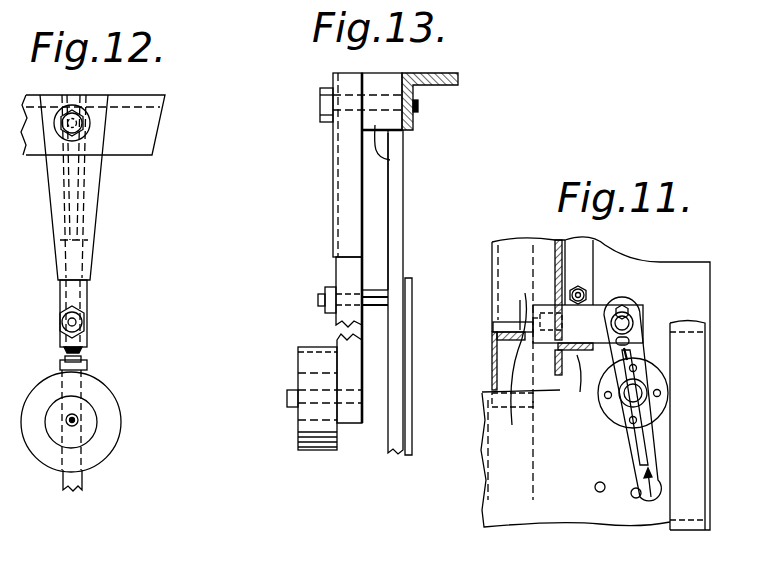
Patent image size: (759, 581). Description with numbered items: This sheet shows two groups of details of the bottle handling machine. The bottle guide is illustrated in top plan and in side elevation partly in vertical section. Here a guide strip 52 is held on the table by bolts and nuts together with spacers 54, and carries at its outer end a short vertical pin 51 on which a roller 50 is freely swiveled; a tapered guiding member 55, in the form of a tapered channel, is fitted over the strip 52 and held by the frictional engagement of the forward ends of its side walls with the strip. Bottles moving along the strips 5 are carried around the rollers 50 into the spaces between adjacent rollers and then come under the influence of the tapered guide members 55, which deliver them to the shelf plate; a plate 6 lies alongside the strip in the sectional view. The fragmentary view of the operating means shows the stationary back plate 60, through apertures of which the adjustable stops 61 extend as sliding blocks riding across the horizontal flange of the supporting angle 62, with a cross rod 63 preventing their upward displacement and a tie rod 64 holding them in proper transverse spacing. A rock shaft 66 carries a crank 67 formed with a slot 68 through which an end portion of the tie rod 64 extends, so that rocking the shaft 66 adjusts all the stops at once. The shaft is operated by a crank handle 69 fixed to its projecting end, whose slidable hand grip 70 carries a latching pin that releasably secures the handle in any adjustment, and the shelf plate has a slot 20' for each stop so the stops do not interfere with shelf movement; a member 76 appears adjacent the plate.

In FIG. 13, the strips 5 is at (405, 182).
In FIG. 11, the strips 5 is at (493, 327).
In FIG. 13, the plate 6 is at (407, 318).
In FIG. 11, the slot 20' is at (595, 383).
In FIG. 12, the rollers 50 is at (108, 418).
In FIG. 13, the rollers 50 is at (312, 360).
In FIG. 12, the vertical pin 51 is at (76, 418).
In FIG. 13, the vertical pin 51 is at (287, 400).
In FIG. 13, the guide strip 52 is at (350, 282).
In FIG. 13, the spacers 54 is at (390, 160).
In FIG. 12, the tapered guiding member 55 is at (100, 195).
In FIG. 13, the tapered guiding member 55 is at (345, 193).
In FIG. 11, the back plate 60 is at (556, 248).
In FIG. 11, the adjustable stops 61 is at (643, 313).
In FIG. 11, the supporting angle 62 is at (615, 360).
In FIG. 11, the cross rod 63 is at (585, 292).
In FIG. 11, the tie rod 64 is at (641, 308).
In FIG. 11, the rock shaft 66 is at (636, 392).
In FIG. 11, the crank 67 is at (633, 355).
In FIG. 11, the slot 68 is at (624, 318).
In FIG. 11, the crank handle 69 is at (641, 497).
In FIG. 11, the hand grip 70 is at (651, 500).
In FIG. 11, the member 76 is at (515, 304).